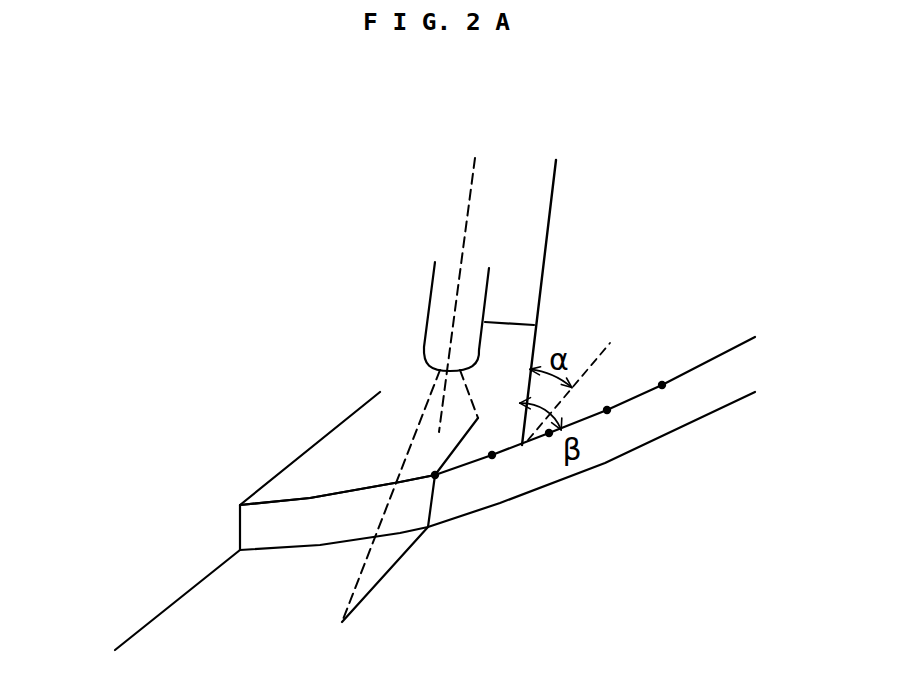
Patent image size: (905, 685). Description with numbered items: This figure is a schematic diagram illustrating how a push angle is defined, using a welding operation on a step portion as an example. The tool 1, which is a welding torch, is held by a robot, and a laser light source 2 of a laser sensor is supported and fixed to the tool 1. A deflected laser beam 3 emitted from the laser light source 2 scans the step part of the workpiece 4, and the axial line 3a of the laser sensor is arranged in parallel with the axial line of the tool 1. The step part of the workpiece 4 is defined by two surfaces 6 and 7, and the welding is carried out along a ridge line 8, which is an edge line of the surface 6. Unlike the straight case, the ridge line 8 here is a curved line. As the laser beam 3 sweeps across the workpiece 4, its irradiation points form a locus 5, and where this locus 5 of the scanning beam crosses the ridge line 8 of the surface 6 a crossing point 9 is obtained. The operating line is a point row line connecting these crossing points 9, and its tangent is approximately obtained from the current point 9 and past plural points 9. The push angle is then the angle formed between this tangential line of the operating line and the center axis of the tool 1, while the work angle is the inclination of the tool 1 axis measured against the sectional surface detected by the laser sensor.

The tool 1 is at (542, 267).
The laser light source 2 is at (440, 293).
The laser beam 3 is at (425, 430).
The axial line of the laser sensor 3a is at (467, 220).
The workpiece 4 is at (200, 520).
The locus of irradiation points 5 is at (392, 568).
The surface 6 is at (323, 462).
The surface 7 is at (203, 602).
The ridge line 8 is at (310, 498).
The crossing points 9 is at (662, 385).